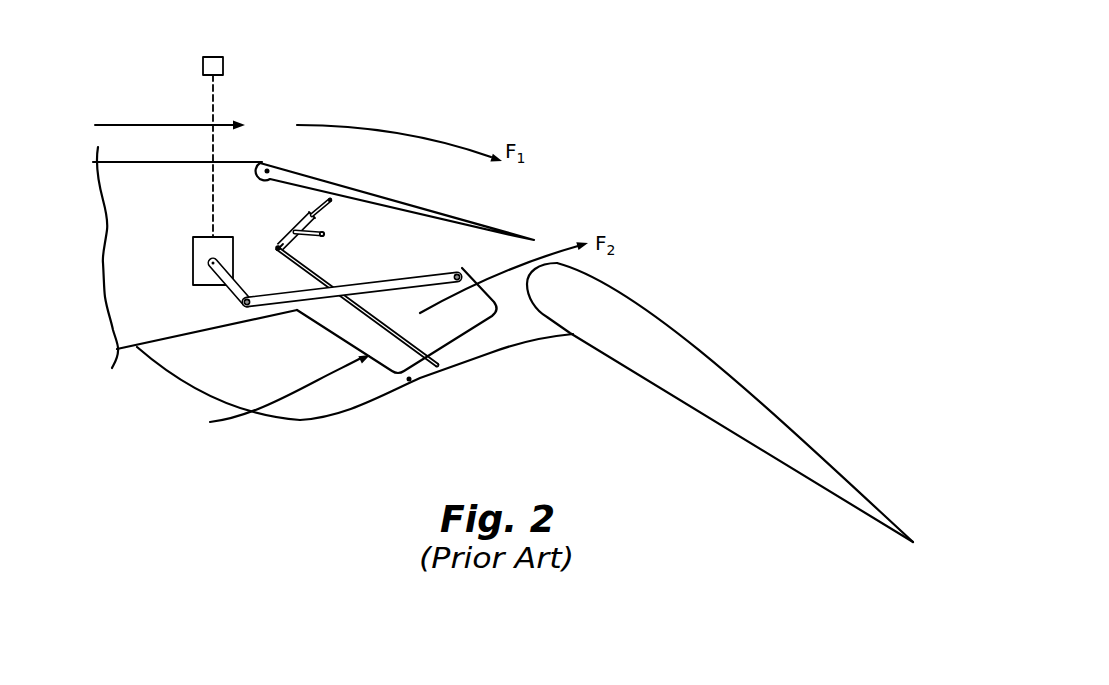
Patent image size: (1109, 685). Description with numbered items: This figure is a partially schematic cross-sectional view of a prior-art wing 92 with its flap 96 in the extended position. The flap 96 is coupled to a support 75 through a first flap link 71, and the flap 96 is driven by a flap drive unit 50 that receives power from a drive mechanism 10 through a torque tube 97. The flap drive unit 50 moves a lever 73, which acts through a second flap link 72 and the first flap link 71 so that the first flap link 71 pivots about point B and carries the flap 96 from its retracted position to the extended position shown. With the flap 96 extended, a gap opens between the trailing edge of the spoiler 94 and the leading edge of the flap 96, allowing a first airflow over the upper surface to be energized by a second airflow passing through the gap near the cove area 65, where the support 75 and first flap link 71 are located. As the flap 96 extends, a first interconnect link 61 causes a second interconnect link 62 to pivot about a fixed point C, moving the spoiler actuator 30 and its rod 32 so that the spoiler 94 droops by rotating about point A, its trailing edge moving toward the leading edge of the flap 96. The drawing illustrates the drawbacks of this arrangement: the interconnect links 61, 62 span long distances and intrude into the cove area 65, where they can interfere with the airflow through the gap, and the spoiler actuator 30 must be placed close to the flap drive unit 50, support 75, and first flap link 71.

The drive mechanism 10 is at (214, 56).
The torque tube 97 is at (212, 110).
The wing 92 is at (140, 173).
The spoiler 94 is at (427, 203).
The spoiler actuator 30 is at (306, 222).
The actuator rod 32 is at (328, 208).
The second interconnect link 62 is at (276, 246).
The first interconnect link 61 is at (360, 318).
The flap drive unit 50 is at (193, 242).
The lever 73 is at (227, 296).
The second flap link 72 is at (269, 315).
The support 75 is at (313, 414).
The first flap link 71 is at (485, 357).
The cove area 65 is at (151, 393).
The flap 96 is at (742, 383).
The point A is at (268, 169).
The point B is at (410, 381).
The fixed point C is at (323, 237).